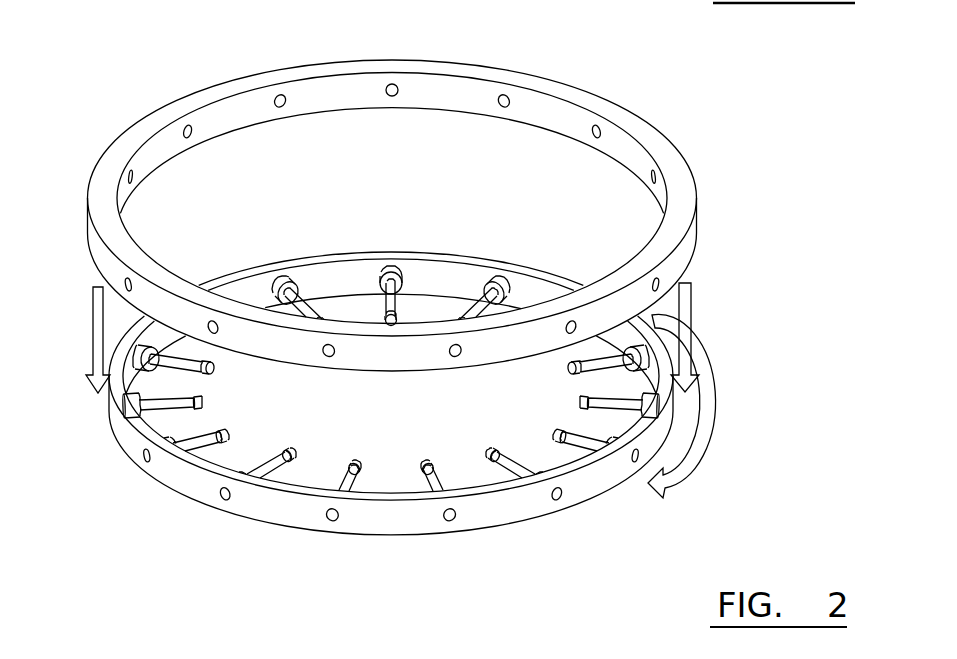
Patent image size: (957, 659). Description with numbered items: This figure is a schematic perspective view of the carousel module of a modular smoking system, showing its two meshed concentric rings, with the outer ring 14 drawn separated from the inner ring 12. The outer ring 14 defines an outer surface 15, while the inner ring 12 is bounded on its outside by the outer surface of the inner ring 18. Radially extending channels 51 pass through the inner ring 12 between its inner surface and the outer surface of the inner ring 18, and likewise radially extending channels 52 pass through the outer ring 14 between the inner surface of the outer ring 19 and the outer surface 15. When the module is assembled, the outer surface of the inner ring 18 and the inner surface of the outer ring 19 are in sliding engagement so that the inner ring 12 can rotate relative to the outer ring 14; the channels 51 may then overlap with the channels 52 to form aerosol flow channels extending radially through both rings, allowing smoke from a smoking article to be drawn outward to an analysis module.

The inner ring 12 is at (637, 423).
The outer ring 14 is at (645, 135).
The outer surface 15 is at (682, 255).
The outer surface of the inner ring 18 is at (595, 478).
The inner surface of the outer ring 19 is at (555, 117).
The radially extending channels 51 is at (555, 498).
The radially extending channels 52 is at (687, 278).